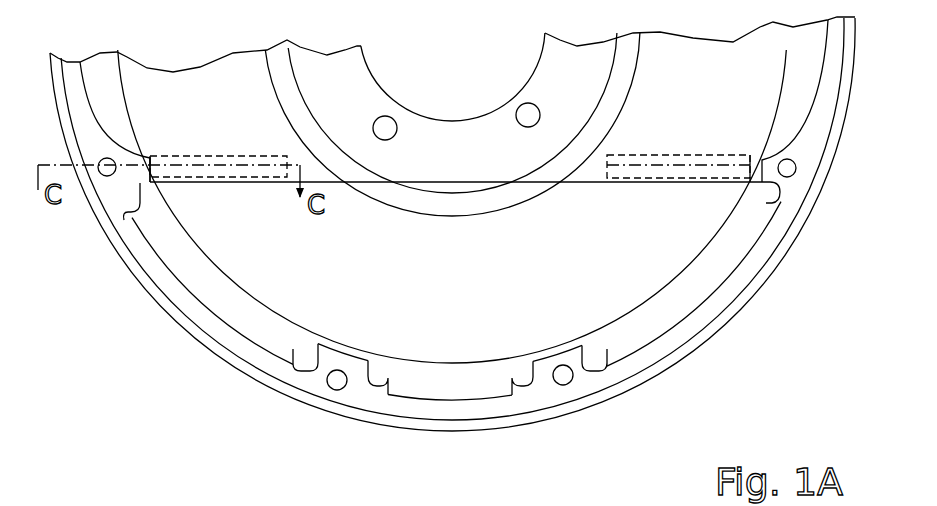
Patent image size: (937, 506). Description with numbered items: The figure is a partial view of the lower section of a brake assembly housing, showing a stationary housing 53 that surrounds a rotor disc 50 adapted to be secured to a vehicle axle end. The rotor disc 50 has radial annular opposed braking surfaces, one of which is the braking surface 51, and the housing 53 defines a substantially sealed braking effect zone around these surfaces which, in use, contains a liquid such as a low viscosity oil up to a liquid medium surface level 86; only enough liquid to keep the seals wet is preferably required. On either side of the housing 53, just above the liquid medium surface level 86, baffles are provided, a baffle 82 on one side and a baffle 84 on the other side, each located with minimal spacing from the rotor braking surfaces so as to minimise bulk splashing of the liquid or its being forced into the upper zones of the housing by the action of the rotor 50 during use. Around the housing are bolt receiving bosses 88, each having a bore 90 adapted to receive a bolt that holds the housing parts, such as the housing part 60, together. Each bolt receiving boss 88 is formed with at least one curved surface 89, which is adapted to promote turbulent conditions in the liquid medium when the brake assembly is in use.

The rotor disc 50 is at (618, 322).
The braking surface 51 is at (620, 260).
The stationary housing 53 is at (725, 337).
The housing part 60 is at (745, 298).
The baffle 82 is at (223, 168).
The baffle 84 is at (670, 163).
The liquid medium surface level 86 is at (575, 187).
The bolt receiving boss 88 is at (130, 178).
The curved surface 89 is at (132, 200).
The bore 90 is at (330, 384).